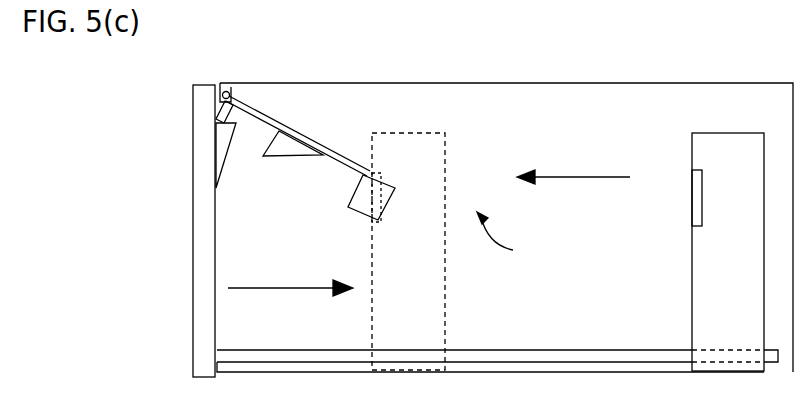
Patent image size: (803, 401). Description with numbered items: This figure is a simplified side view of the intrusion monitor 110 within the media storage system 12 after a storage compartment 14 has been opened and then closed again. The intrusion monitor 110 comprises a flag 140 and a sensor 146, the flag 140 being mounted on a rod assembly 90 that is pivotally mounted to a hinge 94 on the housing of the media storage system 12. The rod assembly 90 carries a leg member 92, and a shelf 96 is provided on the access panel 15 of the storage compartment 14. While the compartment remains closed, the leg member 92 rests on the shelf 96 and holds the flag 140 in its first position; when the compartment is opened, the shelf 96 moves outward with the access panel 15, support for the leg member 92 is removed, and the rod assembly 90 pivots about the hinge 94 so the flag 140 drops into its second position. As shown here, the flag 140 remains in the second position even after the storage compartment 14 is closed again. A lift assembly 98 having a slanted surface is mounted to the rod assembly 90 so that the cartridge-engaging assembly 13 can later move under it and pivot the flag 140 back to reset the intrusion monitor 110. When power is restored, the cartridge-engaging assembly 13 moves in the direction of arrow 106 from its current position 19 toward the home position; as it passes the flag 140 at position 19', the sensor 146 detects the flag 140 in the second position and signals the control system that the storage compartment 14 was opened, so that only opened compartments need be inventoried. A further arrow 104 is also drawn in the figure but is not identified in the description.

The media storage system 12 is at (520, 83).
The cartridge-engaging assembly 13 is at (740, 254).
The storage compartment 14 is at (447, 350).
The access panel 15 is at (192, 258).
The current position 19 is at (490, 381).
The position 19' is at (395, 267).
The rod assembly 90 is at (336, 143).
The leg member 92 is at (240, 120).
The hinge 94 is at (231, 94).
The shelf 96 is at (222, 175).
The lift assembly 98 is at (265, 160).
The tray insertion direction 104 is at (250, 288).
The arrow 106 is at (572, 177).
The intrusion monitor 110 is at (515, 239).
The flag 140 is at (357, 211).
The sensor 146 is at (382, 173).